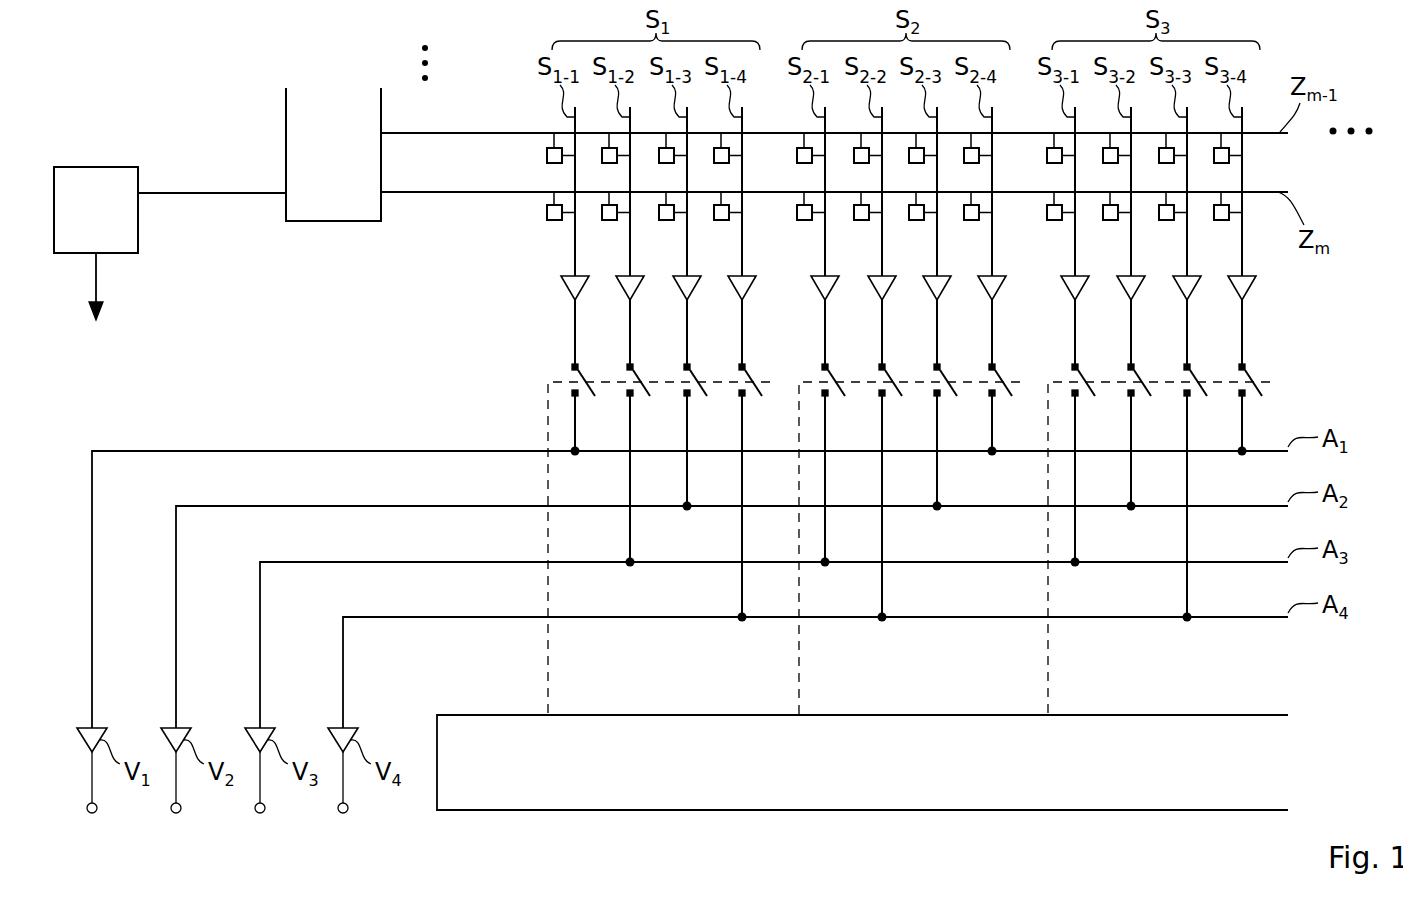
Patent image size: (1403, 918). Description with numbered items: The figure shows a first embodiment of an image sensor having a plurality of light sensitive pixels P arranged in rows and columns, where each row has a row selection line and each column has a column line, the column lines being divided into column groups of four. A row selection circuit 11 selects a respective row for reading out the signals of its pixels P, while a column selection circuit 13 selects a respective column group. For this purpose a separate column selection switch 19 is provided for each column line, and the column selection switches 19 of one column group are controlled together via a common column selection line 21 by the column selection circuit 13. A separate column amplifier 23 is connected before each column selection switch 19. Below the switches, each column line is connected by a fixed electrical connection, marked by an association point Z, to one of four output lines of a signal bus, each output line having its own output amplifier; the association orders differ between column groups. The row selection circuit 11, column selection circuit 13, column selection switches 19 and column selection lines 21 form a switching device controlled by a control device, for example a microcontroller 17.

The row selection circuit 11 is at (286, 130).
The column selection circuit 13 is at (953, 846).
The microcontroller 17 is at (97, 175).
The column selection switch 19 is at (560, 372).
The column selection line 21 is at (548, 668).
The column amplifier 23 is at (1252, 282).
The light sensitive pixel P is at (547, 153).
The association point Z is at (578, 454).